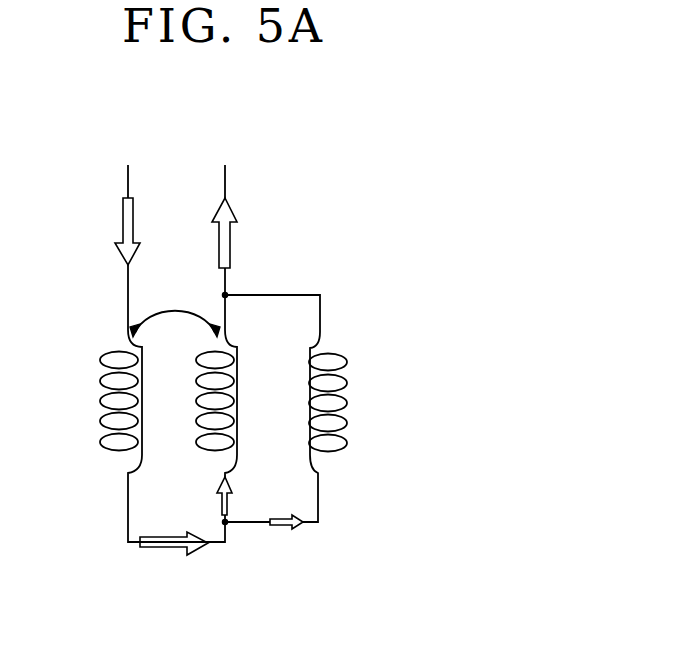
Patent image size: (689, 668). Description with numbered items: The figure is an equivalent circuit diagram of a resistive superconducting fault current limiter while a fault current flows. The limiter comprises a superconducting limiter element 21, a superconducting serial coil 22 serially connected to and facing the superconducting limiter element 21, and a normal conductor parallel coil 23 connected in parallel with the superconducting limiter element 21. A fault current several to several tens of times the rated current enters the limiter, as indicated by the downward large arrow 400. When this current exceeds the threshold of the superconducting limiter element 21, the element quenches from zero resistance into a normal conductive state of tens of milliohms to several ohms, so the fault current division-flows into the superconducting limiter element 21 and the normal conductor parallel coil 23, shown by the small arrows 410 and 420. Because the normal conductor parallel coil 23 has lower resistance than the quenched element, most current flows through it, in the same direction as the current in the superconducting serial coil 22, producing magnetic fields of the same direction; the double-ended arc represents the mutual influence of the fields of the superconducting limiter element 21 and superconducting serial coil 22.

The fault current 400 is at (220, 210).
The superconducting limiter element 21 is at (238, 347).
The superconducting serial coil 22 is at (102, 400).
The normal conductor parallel coil 23 is at (330, 353).
The fault current division-flowing to the superconducting limiter element 410 is at (227, 515).
The fault current division-flowing to the normal conductor parallel coil 420 is at (302, 530).